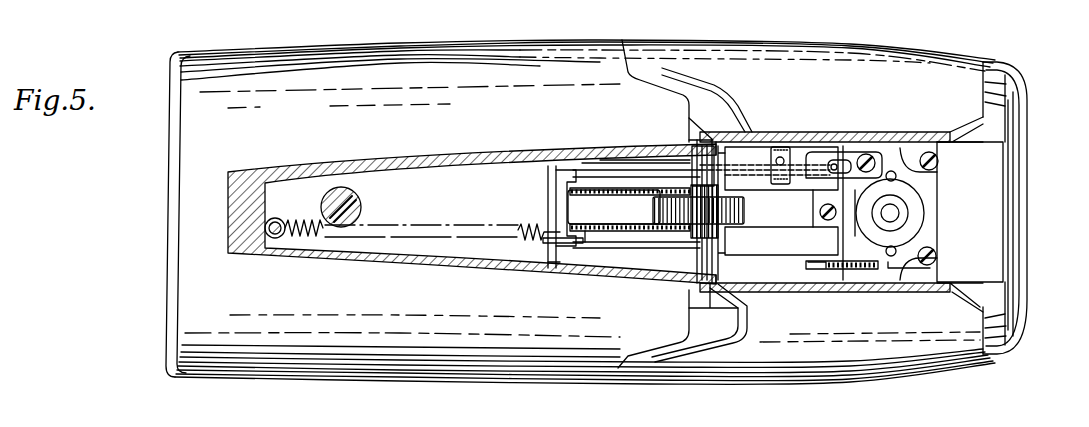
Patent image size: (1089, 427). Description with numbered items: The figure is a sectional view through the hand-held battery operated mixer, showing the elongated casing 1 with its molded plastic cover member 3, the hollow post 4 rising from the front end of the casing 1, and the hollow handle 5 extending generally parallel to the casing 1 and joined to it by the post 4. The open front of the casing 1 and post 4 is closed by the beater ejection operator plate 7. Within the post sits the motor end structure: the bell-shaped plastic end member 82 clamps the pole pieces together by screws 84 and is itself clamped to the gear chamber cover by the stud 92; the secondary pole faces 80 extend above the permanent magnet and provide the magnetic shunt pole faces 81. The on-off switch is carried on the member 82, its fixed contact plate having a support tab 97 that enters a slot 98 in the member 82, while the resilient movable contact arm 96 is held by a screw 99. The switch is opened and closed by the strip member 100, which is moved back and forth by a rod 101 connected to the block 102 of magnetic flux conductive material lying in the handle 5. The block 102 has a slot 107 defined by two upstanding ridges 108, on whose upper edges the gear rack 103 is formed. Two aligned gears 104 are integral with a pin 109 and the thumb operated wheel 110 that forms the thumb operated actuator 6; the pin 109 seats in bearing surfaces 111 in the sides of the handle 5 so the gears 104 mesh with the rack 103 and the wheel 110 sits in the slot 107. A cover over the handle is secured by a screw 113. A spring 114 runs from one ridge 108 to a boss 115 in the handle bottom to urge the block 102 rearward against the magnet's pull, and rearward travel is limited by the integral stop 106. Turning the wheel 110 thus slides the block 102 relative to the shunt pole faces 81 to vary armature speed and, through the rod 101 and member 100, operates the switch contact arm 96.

The casing 1 is at (370, 40).
The cover member 3 is at (262, 378).
The hollow post 4 is at (863, 130).
The hollow handle 5 is at (412, 156).
The thumb operated actuator 6 is at (746, 212).
The beater ejection operator plate 7 is at (1016, 222).
The secondary pole faces 80 is at (750, 172).
The magnetic shunt pole faces 81 is at (822, 187).
The bell-shaped plastic end member 82 is at (916, 210).
The screws 84 is at (934, 163).
The stud 92 is at (819, 213).
The movable contact arm 96 is at (802, 154).
The support tab 97 is at (862, 270).
The slot 98 is at (826, 270).
The screw 99 is at (868, 154).
The member 100 is at (784, 150).
The rod 101 is at (617, 162).
The block of magnetic flux conductive material 102 is at (562, 189).
The gear rack 103 is at (596, 230).
The gear 104 is at (720, 228).
The integral stop 106 is at (552, 252).
The slot 107 is at (622, 215).
The upstanding ridges 108 is at (560, 214).
The pin 109 is at (688, 160).
The thumb operated wheel 110 is at (642, 231).
The bearing surfaces 111 is at (700, 150).
The screw 113 is at (334, 200).
The spring 114 is at (402, 219).
The boss 115 is at (280, 238).